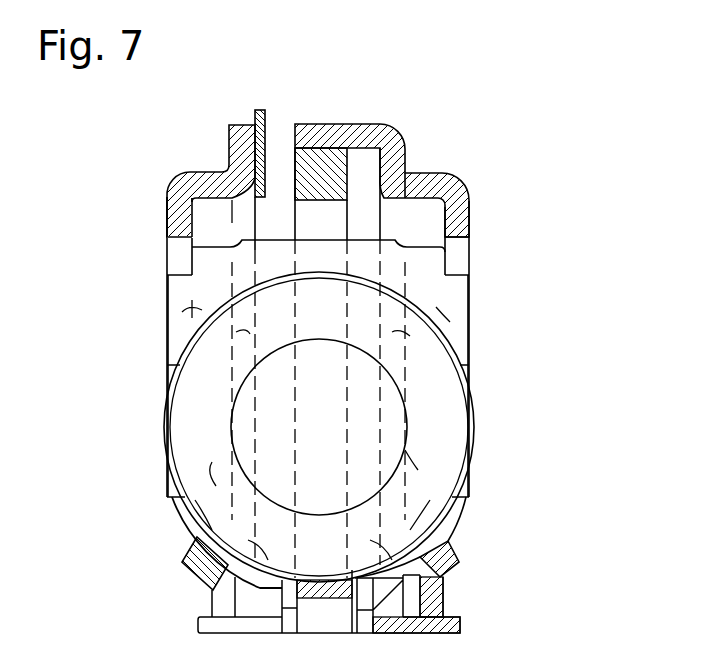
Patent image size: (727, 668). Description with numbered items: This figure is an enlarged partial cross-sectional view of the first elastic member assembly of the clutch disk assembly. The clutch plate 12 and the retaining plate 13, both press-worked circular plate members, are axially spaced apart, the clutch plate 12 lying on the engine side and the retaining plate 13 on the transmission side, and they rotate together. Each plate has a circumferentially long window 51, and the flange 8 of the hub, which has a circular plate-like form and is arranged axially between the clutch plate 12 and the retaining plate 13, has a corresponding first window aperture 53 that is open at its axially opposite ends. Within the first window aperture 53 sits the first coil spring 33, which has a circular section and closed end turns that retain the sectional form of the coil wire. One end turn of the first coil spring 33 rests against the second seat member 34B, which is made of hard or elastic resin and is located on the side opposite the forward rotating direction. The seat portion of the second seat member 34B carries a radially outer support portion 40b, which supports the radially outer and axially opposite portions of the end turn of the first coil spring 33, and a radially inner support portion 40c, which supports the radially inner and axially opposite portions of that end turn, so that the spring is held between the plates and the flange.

The flange 8 is at (350, 132).
The clutch plate 12 is at (182, 186).
The retaining plate 13 is at (452, 190).
The first window aperture 53 is at (336, 222).
The radially outer support portion 40b is at (417, 272).
The second seat member 34B is at (487, 302).
The window 51 is at (158, 352).
The first coil spring 33 is at (445, 430).
The radially inner support portion 40c is at (208, 583).